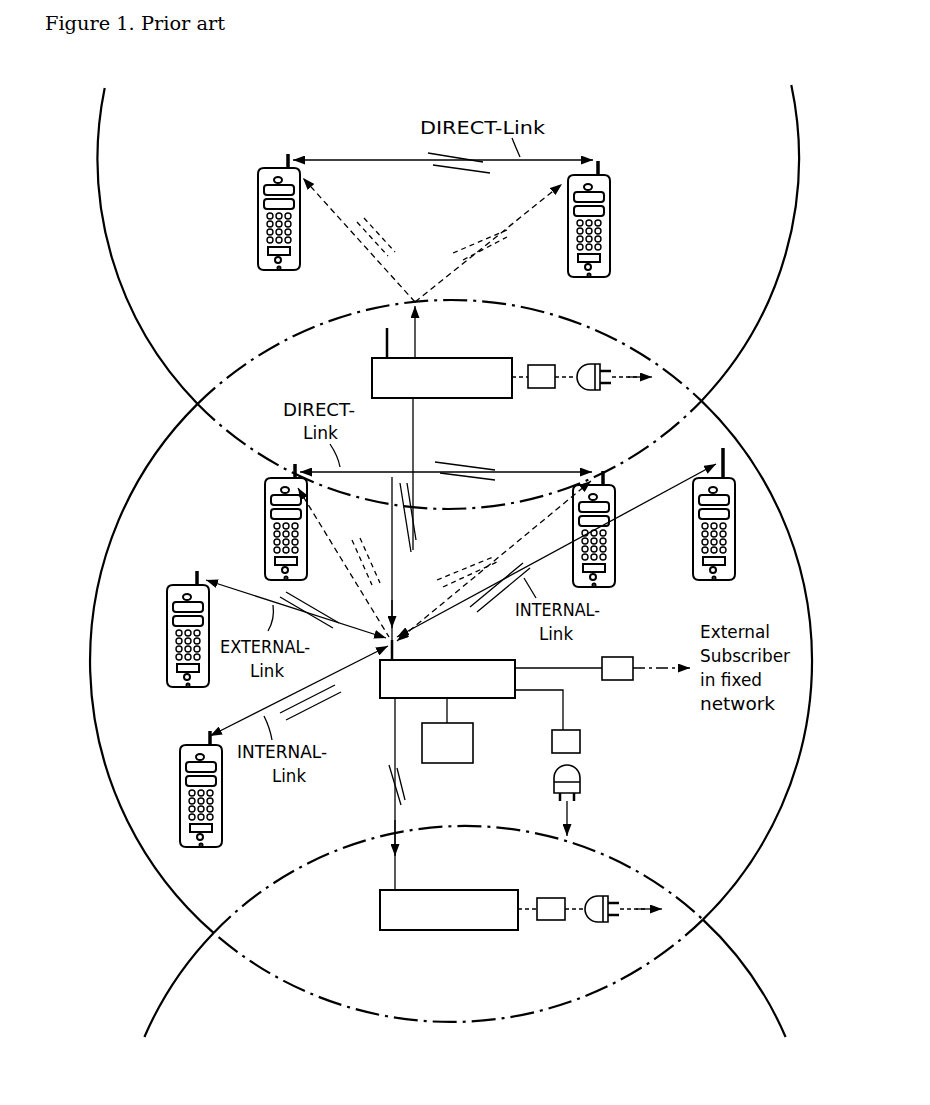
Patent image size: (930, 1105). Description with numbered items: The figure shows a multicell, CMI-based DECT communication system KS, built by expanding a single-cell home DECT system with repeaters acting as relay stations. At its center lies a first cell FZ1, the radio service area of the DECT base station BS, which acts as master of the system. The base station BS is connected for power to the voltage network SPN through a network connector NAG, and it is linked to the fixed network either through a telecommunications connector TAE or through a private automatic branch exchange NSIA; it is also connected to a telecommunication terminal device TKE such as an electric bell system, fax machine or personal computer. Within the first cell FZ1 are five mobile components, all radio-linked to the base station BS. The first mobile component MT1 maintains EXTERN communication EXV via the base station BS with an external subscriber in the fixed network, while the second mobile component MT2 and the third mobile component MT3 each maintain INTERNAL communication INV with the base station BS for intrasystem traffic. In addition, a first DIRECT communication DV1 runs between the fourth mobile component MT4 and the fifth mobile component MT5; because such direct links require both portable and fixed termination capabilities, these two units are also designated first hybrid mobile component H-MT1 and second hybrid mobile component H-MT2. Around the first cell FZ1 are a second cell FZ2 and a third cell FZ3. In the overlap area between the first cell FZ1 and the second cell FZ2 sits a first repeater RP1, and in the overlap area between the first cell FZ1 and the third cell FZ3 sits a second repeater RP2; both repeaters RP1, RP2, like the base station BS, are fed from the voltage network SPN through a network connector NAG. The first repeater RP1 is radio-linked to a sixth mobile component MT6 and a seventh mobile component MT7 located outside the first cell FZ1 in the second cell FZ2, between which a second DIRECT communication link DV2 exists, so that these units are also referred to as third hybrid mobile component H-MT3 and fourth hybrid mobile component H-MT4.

The communication system KS is at (158, 424).
The first cell FZ1 is at (735, 430).
The second cell FZ2 is at (160, 368).
The third cell FZ3 is at (730, 944).
The first mobile component MT1 is at (190, 581).
The second mobile component MT2 is at (223, 798).
The third mobile component MT3 is at (735, 557).
The fourth mobile component MT4 is at (242, 522).
The fifth mobile component MT5 is at (630, 531).
The sixth mobile component MT6 is at (236, 212).
The seventh mobile component MT7 is at (632, 219).
The first hybrid mobile component H-MT1 is at (263, 497).
The second hybrid mobile component H-MT2 is at (615, 556).
The third hybrid mobile component H-MT3 is at (256, 223).
The fourth hybrid mobile component H-MT4 is at (612, 227).
The first repeater RP1 is at (370, 379).
The second repeater RP2 is at (455, 932).
The base station BS is at (386, 703).
The telecommunication terminal device TKE is at (448, 765).
The telecommunications connector TAE is at (602, 692).
The private automatic branch exchange NSIA is at (616, 680).
The network connector NAG is at (546, 390).
The voltage network SPN is at (615, 385).
The first DIRECT communication DV1 is at (490, 466).
The second DIRECT communication link DV2 is at (360, 157).
The EXTERN communication EXV is at (312, 607).
The INTERNAL communication INV is at (440, 612).